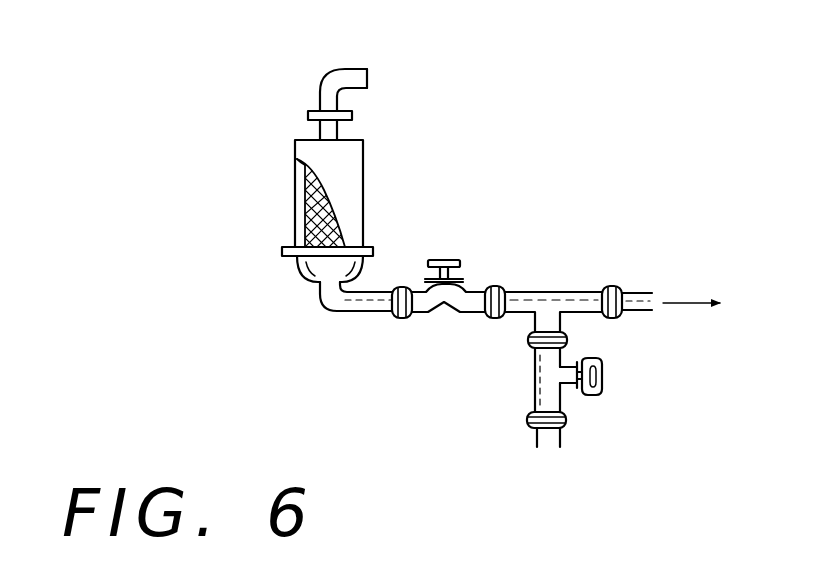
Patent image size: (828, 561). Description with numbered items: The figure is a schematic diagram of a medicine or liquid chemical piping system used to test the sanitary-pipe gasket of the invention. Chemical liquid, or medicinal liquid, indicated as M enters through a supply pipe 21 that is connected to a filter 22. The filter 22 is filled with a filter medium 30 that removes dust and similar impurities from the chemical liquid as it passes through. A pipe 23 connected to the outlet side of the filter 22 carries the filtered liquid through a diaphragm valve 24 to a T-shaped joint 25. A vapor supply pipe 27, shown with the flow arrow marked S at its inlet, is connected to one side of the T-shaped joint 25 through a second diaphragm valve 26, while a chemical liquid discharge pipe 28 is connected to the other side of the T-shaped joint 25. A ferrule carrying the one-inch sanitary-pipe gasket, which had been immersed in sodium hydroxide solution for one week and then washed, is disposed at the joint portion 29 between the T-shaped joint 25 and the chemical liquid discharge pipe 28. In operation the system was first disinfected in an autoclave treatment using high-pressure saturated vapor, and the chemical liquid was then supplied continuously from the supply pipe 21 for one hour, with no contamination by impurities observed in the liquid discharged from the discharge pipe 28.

The supply pipe 21 is at (327, 63).
The filter 22 is at (370, 197).
The filter medium 30 is at (295, 197).
The pipe 23 is at (345, 308).
The diaphragm valve 24 is at (465, 260).
The T-shaped joint 25 is at (545, 288).
The joint portion 29 is at (608, 286).
The chemical liquid discharge pipe 28 is at (642, 312).
The diaphragm valve 26 is at (597, 388).
The vapor supply pipe 27 is at (552, 442).
The chemical liquid M is at (383, 78).
The steam flow S is at (550, 452).